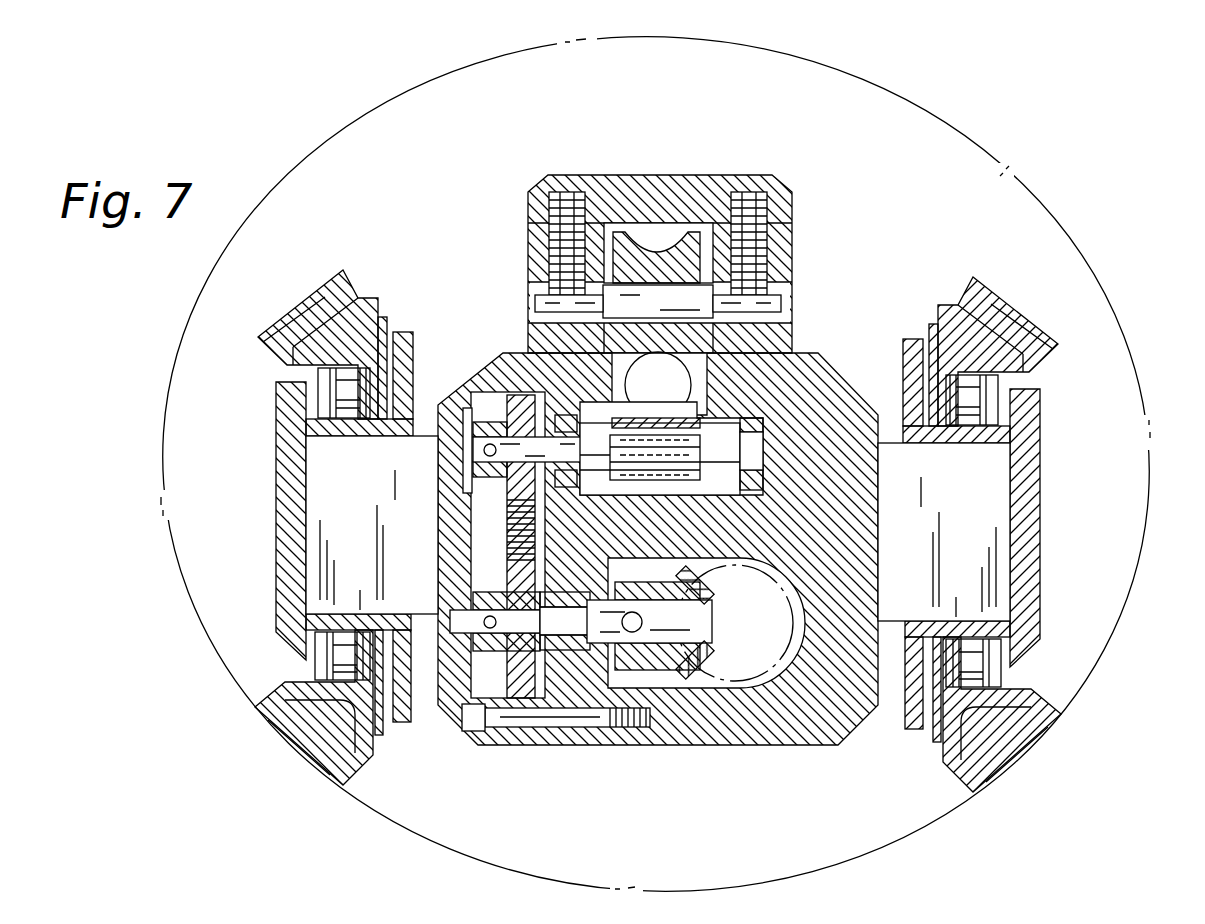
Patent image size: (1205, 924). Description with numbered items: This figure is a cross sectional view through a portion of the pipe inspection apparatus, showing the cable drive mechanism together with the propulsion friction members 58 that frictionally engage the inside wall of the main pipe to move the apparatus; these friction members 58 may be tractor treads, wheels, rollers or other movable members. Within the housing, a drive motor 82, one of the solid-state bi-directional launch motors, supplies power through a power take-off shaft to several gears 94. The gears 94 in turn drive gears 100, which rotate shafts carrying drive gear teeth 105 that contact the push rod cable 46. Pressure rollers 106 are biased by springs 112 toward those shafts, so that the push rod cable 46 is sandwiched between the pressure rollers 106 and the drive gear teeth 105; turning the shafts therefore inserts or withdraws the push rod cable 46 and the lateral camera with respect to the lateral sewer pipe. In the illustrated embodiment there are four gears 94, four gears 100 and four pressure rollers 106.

The push rod cable 46 is at (668, 386).
The friction members 58 is at (315, 735).
The drive motor 82 is at (757, 643).
The gears 94 is at (527, 667).
The gears 100 is at (503, 378).
The drive gear teeth 105 is at (722, 425).
The pressure rollers 106 is at (676, 250).
The springs 112 is at (570, 243).